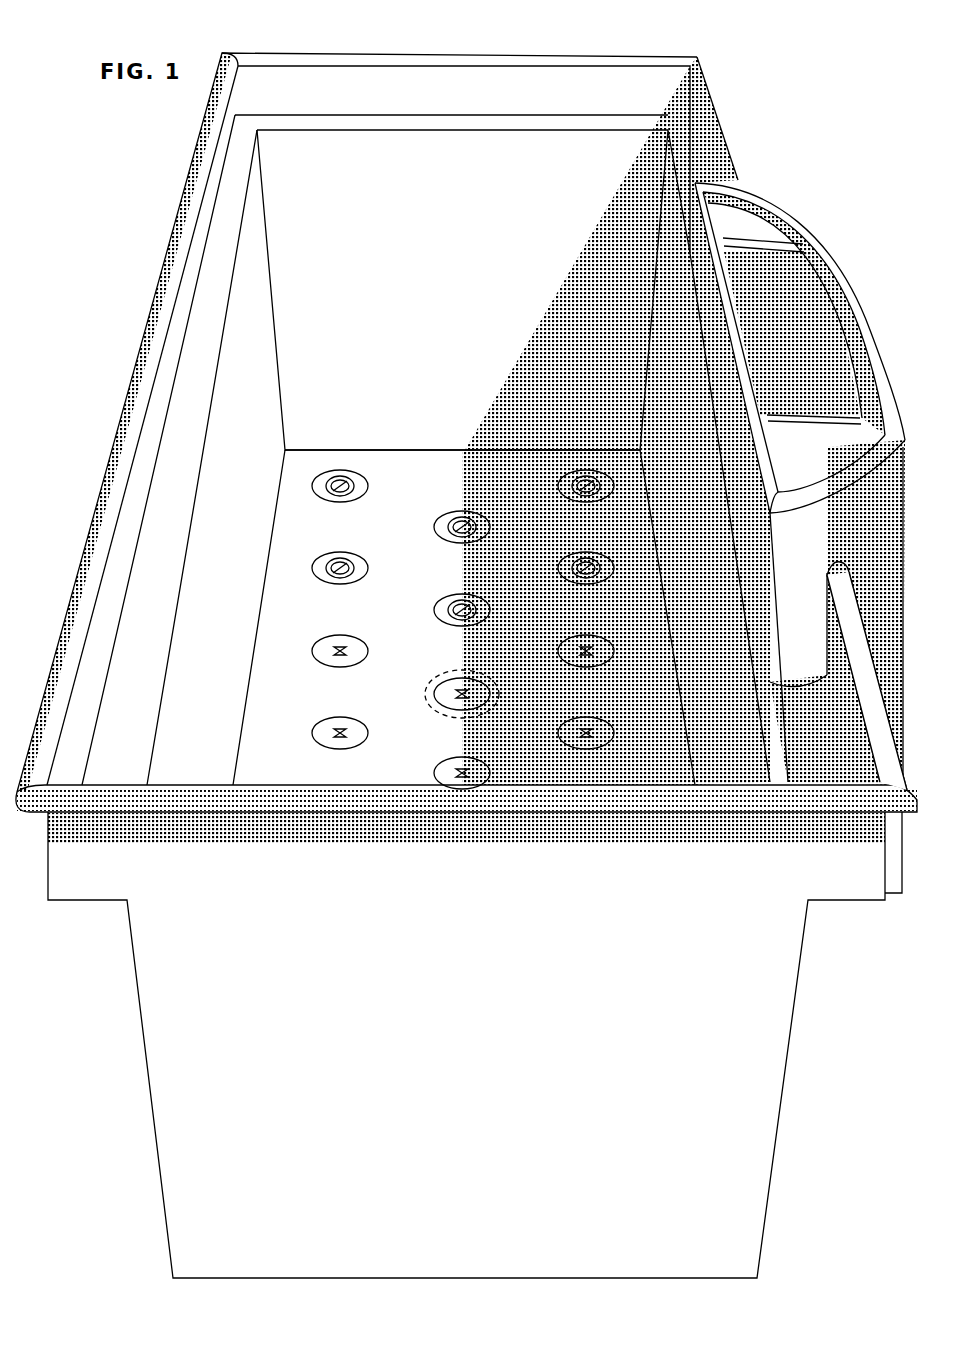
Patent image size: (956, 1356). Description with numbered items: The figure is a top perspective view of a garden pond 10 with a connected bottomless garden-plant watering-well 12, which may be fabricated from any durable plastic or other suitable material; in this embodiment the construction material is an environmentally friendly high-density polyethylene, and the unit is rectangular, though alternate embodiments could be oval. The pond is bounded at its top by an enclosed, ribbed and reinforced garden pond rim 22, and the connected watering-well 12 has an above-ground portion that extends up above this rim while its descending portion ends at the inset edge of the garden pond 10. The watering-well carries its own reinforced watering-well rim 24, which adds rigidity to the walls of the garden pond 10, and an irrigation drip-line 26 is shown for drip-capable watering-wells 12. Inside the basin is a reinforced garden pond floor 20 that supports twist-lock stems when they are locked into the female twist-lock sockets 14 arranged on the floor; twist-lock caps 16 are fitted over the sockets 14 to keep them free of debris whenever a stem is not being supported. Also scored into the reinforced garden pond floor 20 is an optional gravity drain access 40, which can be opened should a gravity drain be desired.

The garden pond 10 is at (470, 250).
The watering-well 12 is at (788, 335).
The twist-lock socket 14 is at (328, 733).
The twist-lock cap 16 is at (328, 555).
The reinforced garden pond floor 20 is at (315, 517).
The garden pond rim 22 is at (728, 140).
The watering-well rim 24 is at (880, 398).
The irrigation drip-line 26 is at (847, 357).
The gravity drain access 40 is at (425, 693).